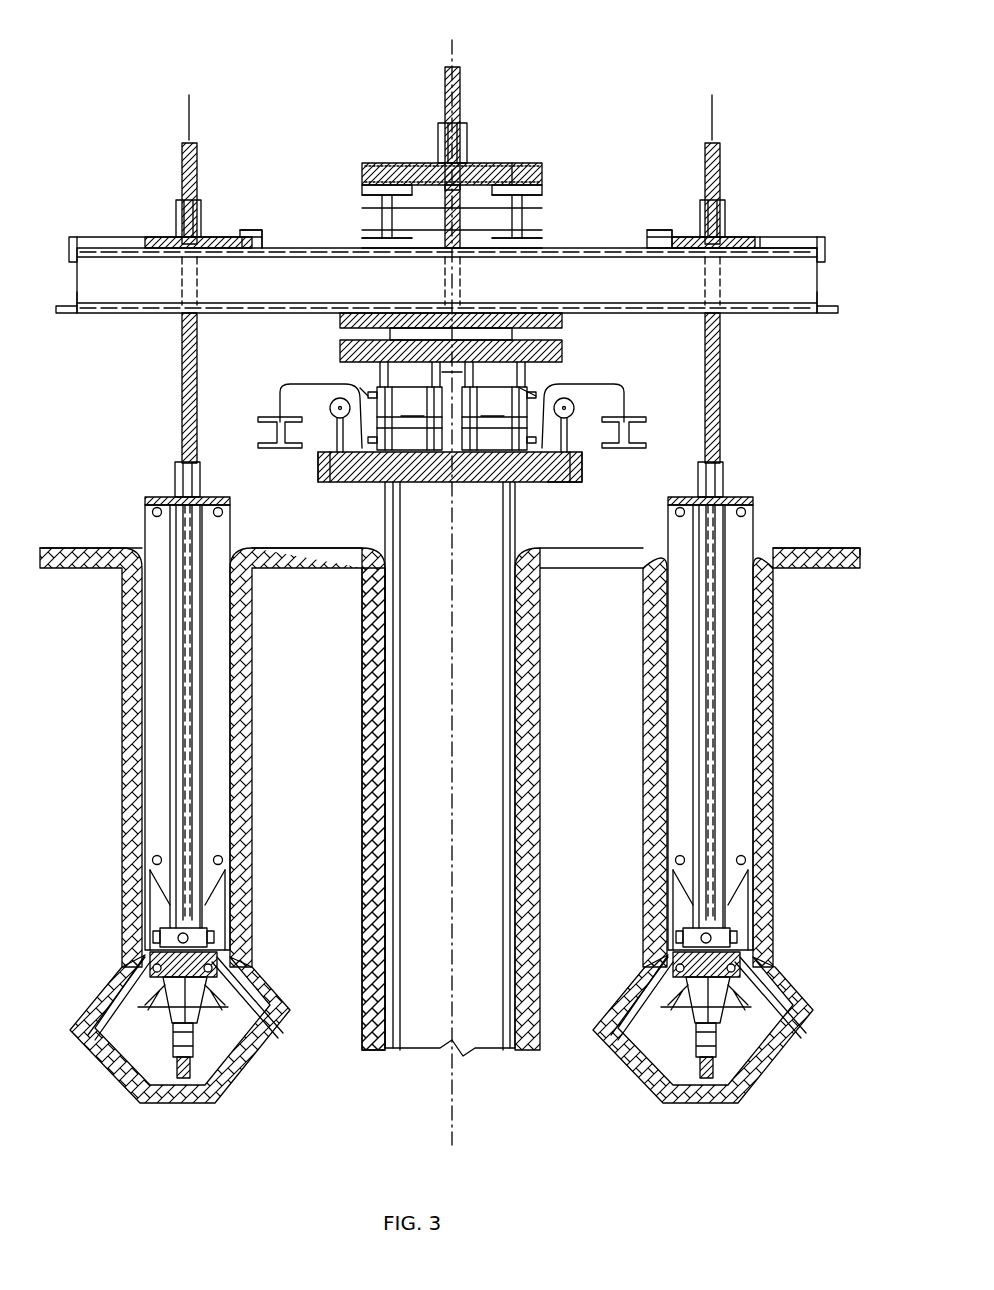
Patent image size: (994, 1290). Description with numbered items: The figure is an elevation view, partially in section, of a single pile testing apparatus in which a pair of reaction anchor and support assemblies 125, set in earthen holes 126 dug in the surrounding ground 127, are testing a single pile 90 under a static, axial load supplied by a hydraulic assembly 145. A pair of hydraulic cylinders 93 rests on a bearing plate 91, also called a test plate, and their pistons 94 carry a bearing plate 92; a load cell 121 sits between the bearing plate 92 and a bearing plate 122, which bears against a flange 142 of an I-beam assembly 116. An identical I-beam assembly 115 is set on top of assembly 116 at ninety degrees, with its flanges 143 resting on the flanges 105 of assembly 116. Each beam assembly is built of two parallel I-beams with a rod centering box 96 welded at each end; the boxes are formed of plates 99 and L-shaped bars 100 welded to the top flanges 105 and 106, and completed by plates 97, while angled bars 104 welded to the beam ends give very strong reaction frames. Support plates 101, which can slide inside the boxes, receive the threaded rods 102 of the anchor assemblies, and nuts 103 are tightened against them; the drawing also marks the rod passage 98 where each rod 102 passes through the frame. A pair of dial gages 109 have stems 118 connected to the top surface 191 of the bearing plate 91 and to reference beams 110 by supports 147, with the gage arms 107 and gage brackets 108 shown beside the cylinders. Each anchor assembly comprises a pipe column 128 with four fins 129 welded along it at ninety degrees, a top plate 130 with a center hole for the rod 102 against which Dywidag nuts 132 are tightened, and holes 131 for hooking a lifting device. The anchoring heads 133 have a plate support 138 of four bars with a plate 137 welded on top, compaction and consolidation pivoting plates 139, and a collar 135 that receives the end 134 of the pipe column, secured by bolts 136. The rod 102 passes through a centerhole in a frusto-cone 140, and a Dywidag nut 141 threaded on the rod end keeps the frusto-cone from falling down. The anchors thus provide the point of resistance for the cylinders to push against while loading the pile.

The single pile 90 is at (466, 740).
The bearing plate 91 is at (450, 488).
The bearing plate 92 is at (565, 355).
The hydraulic cylinders 93 is at (462, 375).
The pistons 94 is at (478, 375).
The rod centering box 96 is at (224, 234).
The plates 97 is at (77, 246).
The rod collar 98 is at (185, 244).
The plates 99 is at (138, 235).
The L-shaped bars 100 is at (258, 232).
The support plates 101 is at (215, 235).
The threaded rods 102 is at (182, 150).
The nuts 103 is at (180, 200).
The angled bars 104 is at (65, 315).
The flanges 105 is at (602, 254).
The top flanges 106 is at (362, 205).
The arm 107 is at (310, 386).
The bracket 108 is at (370, 388).
The dial gages 109 is at (337, 432).
The reference beams 110 is at (260, 440).
The I-beam assembly 115 is at (535, 68).
The I-beam assembly 116 is at (650, 170).
The stems 118 is at (320, 470).
The load cell 121 is at (564, 340).
The bearing plate 122 is at (564, 322).
The reaction anchor and support assemblies 125 is at (100, 845).
The earthen holes 126 is at (142, 548).
The ground 127 is at (62, 548).
The pipe column 128 is at (170, 650).
The fins 129 is at (252, 672).
The top plates 130 is at (160, 497).
The holes 131 is at (152, 512).
The Dywidag nuts 132 is at (178, 465).
The anchoring heads 133 is at (75, 955).
The end 134 is at (215, 900).
The collar 135 is at (205, 938).
The bolts 136 is at (155, 935).
The plate 137 is at (218, 957).
The plate support 138 is at (212, 975).
The compaction and consolidation pivoting plates 139 is at (110, 985).
The frusto-cone 140 is at (210, 1013).
The Dywidag nut 141 is at (195, 1065).
The flange 142 is at (757, 315).
The flanges 143 is at (392, 254).
The hydraulic assembly 145 is at (278, 338).
The supports 147 is at (262, 420).
The top surface 191 is at (546, 484).